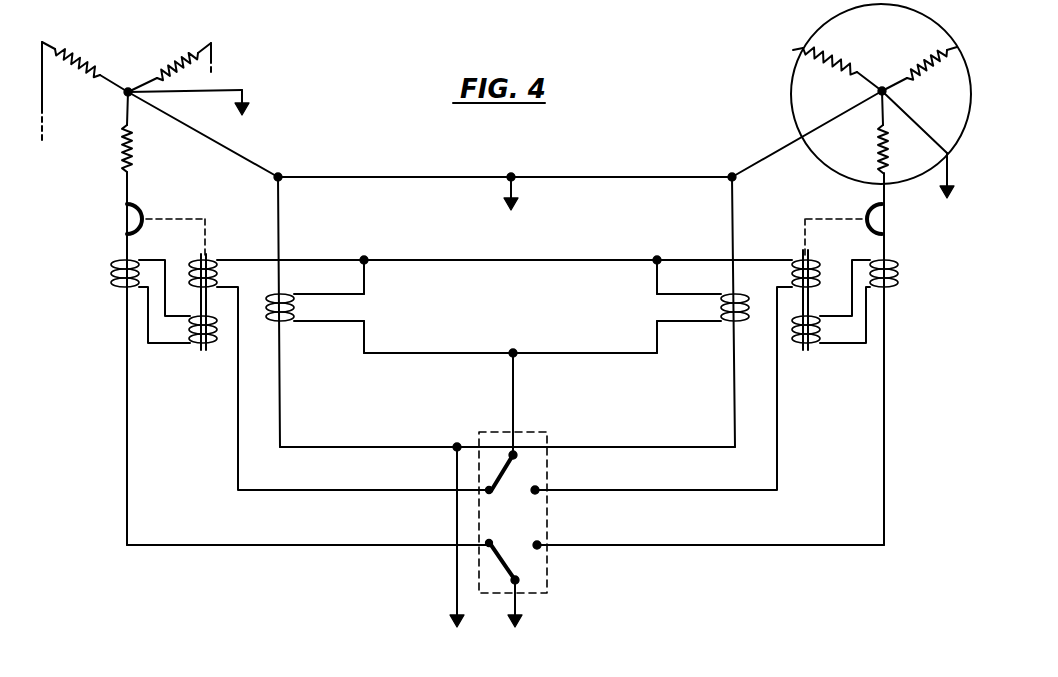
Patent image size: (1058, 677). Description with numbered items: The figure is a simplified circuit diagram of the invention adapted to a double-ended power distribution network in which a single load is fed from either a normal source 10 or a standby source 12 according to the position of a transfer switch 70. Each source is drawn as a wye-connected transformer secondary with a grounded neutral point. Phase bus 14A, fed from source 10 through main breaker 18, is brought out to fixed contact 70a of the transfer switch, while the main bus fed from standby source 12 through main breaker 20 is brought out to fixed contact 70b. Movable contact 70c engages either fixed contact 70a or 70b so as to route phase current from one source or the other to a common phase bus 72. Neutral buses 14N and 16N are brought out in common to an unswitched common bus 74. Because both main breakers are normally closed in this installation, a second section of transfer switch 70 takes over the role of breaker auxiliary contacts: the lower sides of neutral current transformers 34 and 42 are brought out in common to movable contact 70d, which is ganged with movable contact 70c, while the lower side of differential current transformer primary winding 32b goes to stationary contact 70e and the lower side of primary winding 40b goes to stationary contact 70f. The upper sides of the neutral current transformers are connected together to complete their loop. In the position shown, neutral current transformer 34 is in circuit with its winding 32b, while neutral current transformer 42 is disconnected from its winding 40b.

The normal source 10 is at (141, 61).
The standby source 12 is at (898, 64).
The main circuit breaker 18 is at (100, 268).
The main circuit breaker 20 is at (905, 266).
The primary winding of differential current transformer 32b is at (191, 265).
The primary winding of differential current transformer 40b is at (818, 264).
The neutral current transformer 34 is at (268, 319).
The neutral current transformer 42 is at (749, 307).
The phase bus 14A is at (127, 430).
The neutral bus 14N is at (281, 404).
The neutral bus 16N is at (735, 396).
The transfer switch 70 is at (549, 571).
The fixed contact 70a is at (486, 553).
The fixed contact 70b is at (540, 544).
The movable contact 70c is at (514, 610).
The movable contact 70d is at (510, 467).
The stationary contact 70e is at (497, 474).
The stationary contact 70f is at (540, 492).
The common phase bus 72 is at (519, 611).
The unswitched common phase bus 74 is at (456, 615).